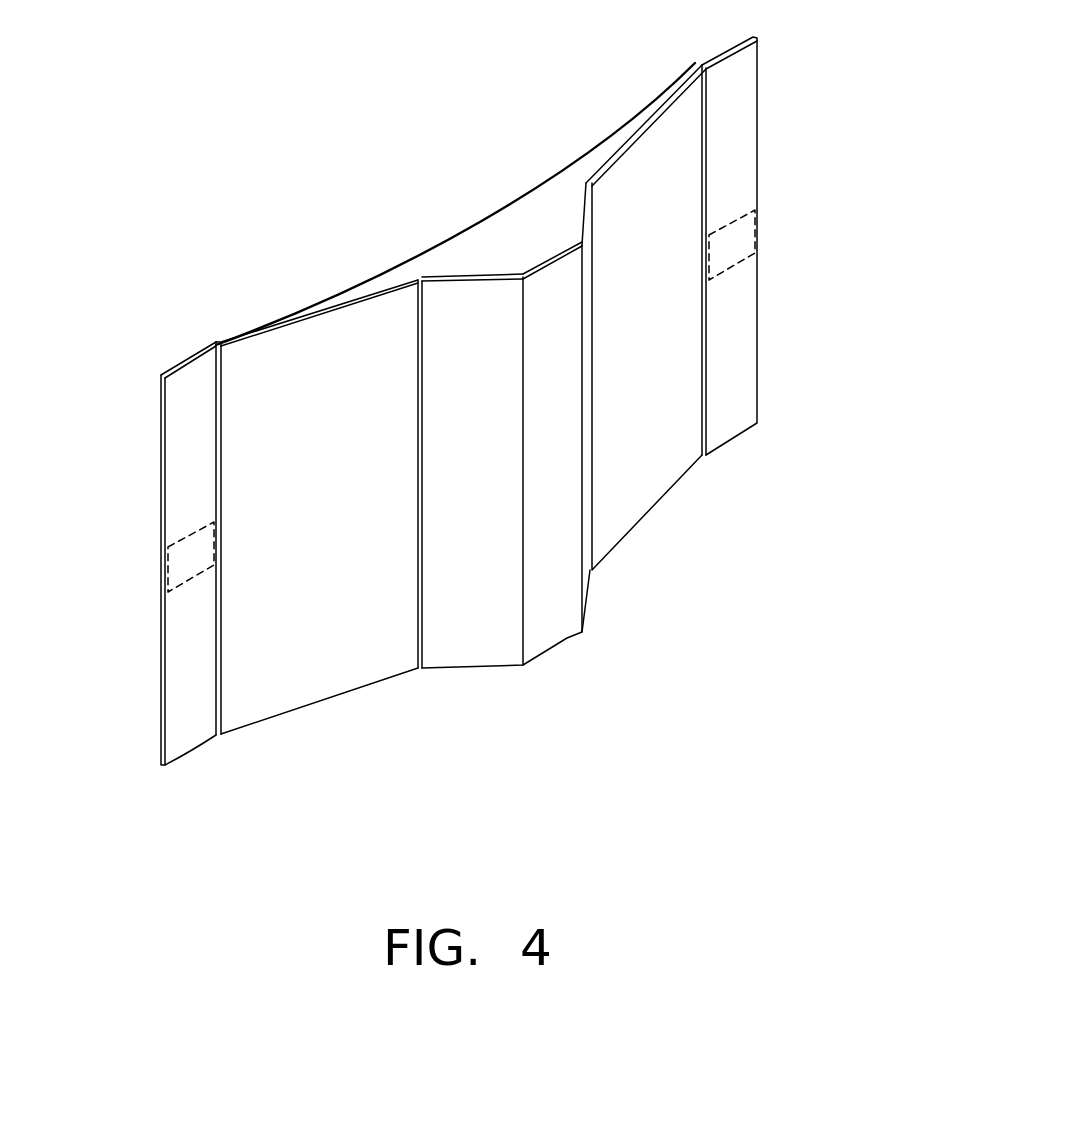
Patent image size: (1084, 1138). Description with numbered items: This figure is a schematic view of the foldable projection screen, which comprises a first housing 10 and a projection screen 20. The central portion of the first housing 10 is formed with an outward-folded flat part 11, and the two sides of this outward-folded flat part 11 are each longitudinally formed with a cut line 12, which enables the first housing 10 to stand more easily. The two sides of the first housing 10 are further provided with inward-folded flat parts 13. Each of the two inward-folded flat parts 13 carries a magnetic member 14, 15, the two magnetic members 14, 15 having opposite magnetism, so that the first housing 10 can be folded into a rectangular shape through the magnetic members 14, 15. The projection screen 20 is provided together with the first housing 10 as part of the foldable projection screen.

The first panel 10 is at (315, 347).
The second panel 11 is at (538, 618).
The third panel 12 is at (420, 573).
The side panel 13 is at (187, 425).
The magnetic member 14 is at (738, 238).
The magnetic member 15 is at (185, 562).
The flexible sheet 20 is at (520, 240).